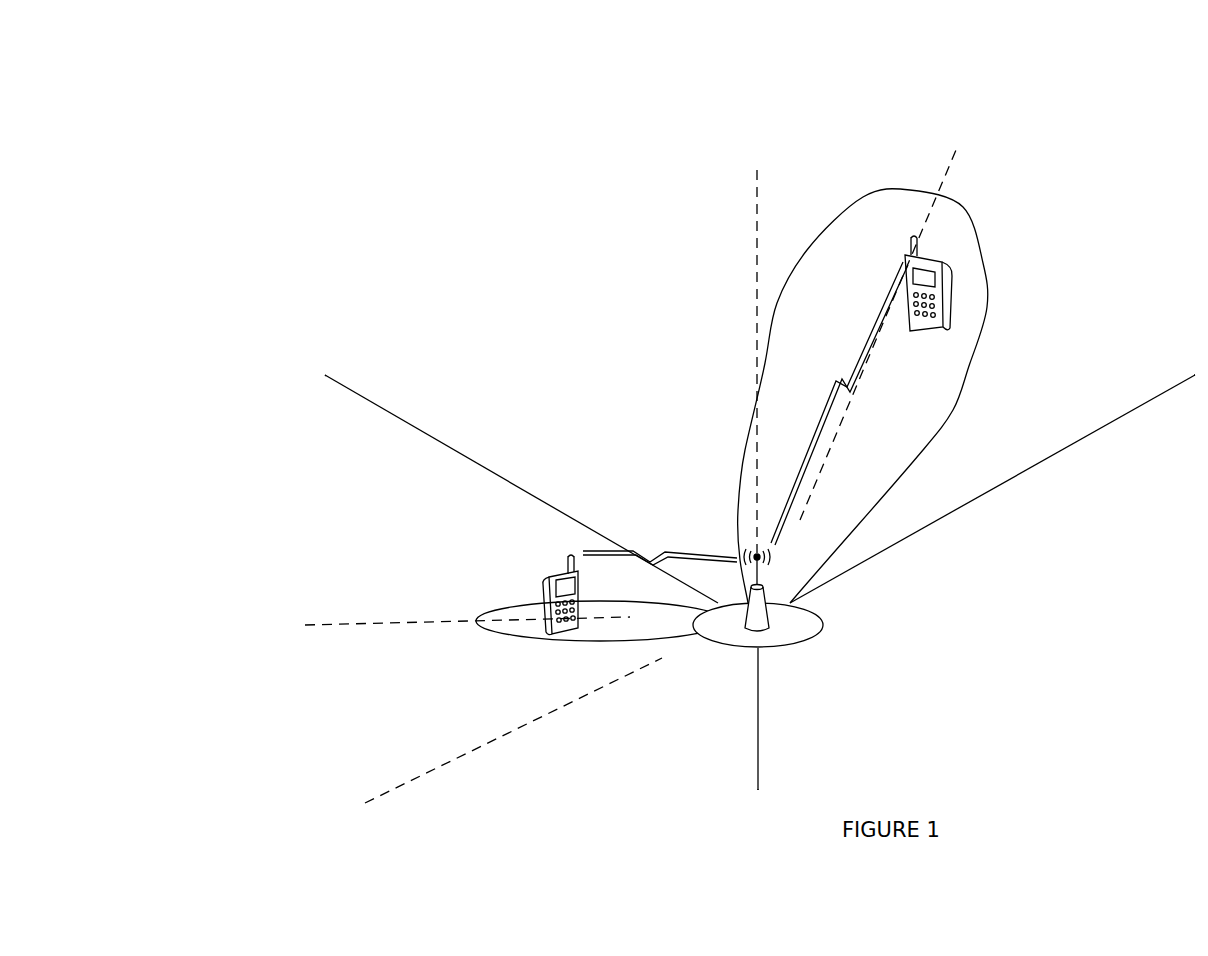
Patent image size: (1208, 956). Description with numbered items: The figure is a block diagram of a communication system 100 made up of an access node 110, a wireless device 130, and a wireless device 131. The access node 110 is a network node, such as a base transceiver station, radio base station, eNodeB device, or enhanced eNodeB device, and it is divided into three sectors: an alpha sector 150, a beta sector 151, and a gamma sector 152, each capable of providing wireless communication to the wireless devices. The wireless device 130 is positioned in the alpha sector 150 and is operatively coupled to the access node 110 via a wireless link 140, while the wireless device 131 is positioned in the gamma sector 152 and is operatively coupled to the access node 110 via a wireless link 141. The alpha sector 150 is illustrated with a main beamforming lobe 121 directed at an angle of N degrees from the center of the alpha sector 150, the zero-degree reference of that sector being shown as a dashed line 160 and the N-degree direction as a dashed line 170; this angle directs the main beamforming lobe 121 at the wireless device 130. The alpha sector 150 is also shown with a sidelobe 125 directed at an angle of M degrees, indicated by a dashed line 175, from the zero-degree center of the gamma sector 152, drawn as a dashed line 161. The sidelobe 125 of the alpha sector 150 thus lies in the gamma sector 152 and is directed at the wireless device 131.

The communication system 100 is at (250, 92).
The access node 110 is at (770, 633).
The main beamforming lobe 121 is at (948, 413).
The sidelobe 125 is at (638, 641).
The wireless device 130 is at (948, 328).
The wireless device 131 is at (548, 632).
The wireless link 140 is at (866, 330).
The wireless link 141 is at (643, 548).
The alpha sector 150 is at (414, 336).
The beta sector 151 is at (1082, 528).
The gamma sector 152 is at (695, 755).
The 0 degree reference line 160 is at (757, 240).
The 0 degree reference line 161 is at (442, 765).
The N degree direction line 170 is at (945, 178).
The M degree direction line 175 is at (403, 622).